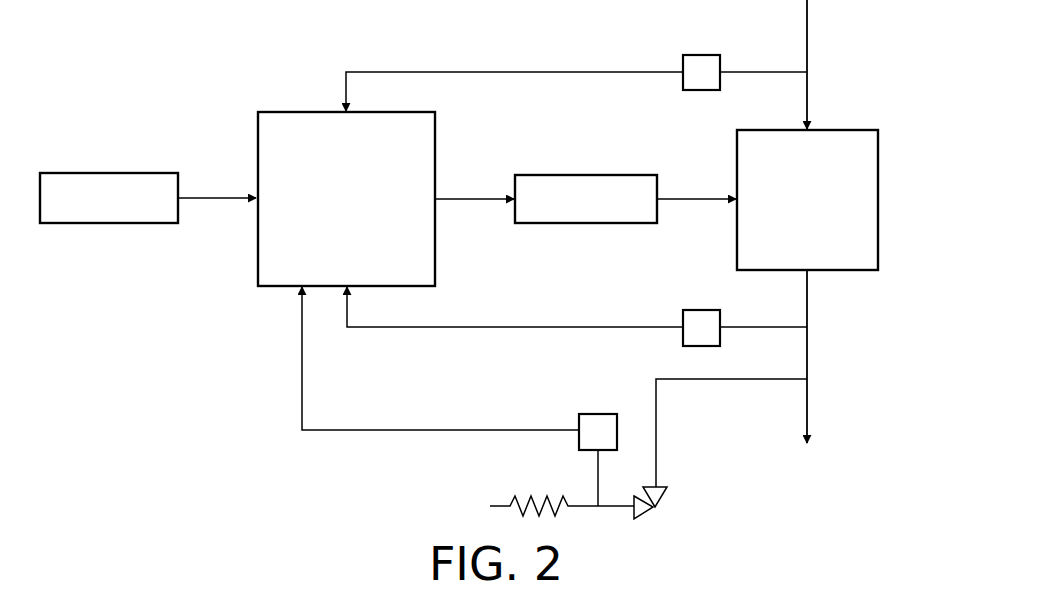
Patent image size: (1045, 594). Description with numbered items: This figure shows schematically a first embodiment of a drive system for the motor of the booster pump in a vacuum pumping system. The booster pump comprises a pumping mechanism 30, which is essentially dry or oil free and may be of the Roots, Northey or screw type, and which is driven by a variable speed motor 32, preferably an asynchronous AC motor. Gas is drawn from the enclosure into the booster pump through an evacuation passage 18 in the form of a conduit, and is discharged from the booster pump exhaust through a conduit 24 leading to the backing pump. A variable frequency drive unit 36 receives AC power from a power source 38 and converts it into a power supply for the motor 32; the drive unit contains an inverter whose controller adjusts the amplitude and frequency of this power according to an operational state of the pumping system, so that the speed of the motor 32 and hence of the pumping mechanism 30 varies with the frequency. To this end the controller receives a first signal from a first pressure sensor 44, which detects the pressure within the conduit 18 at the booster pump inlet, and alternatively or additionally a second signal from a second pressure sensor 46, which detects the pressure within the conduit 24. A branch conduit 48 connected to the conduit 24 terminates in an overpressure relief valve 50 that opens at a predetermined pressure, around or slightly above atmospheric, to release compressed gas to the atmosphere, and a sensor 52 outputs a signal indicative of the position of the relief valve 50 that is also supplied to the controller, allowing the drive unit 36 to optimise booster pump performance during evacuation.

The evacuation passage 18 is at (808, 90).
The conduit 24 is at (808, 303).
The pumping mechanism 30 is at (879, 150).
The variable speed motor 32 is at (630, 175).
The variable frequency drive unit 36 is at (436, 133).
The power source 38 is at (152, 173).
The first pressure sensor 44 is at (700, 55).
The second pressure sensor 46 is at (700, 310).
The branch conduit 48 is at (730, 380).
The overpressure relief valve 50 is at (662, 500).
The sensor 52 is at (598, 414).